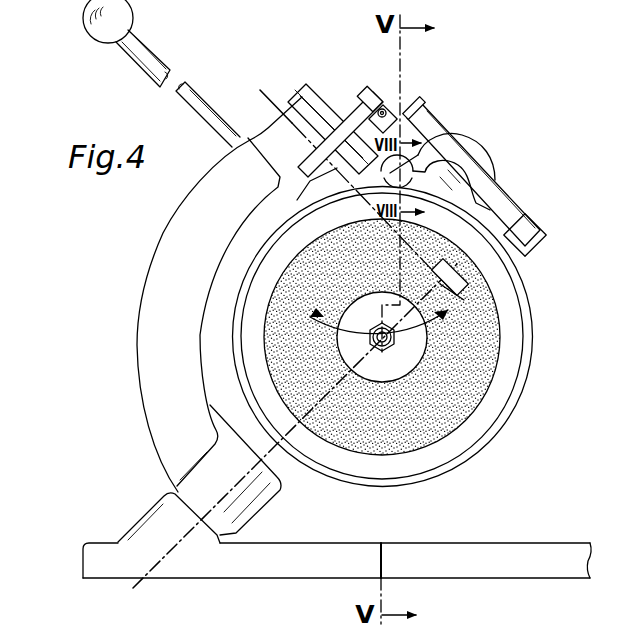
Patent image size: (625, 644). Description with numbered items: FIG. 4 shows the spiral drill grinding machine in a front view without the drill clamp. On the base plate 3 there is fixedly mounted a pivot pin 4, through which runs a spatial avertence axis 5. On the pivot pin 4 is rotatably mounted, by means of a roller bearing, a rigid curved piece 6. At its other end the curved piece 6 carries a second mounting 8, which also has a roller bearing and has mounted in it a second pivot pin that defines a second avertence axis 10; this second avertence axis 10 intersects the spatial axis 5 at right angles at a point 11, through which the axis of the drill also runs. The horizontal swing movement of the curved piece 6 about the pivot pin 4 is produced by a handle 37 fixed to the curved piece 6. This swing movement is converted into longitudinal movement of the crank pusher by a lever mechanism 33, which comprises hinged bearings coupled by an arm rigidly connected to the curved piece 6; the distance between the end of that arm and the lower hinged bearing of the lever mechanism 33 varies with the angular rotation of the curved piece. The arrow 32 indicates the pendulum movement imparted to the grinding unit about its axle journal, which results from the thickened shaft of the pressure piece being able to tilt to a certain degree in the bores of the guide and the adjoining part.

The base plate 3 is at (528, 558).
The pivot pin 4 is at (253, 502).
The spatial avertence axis 5 is at (133, 588).
The curved piece 6 is at (160, 373).
The second mounting 8 is at (298, 105).
The second avertence axis 10 is at (463, 293).
The point 11 is at (455, 277).
The arrow 32 is at (435, 320).
The lever mechanism 33 is at (408, 96).
The handle 37 is at (148, 67).